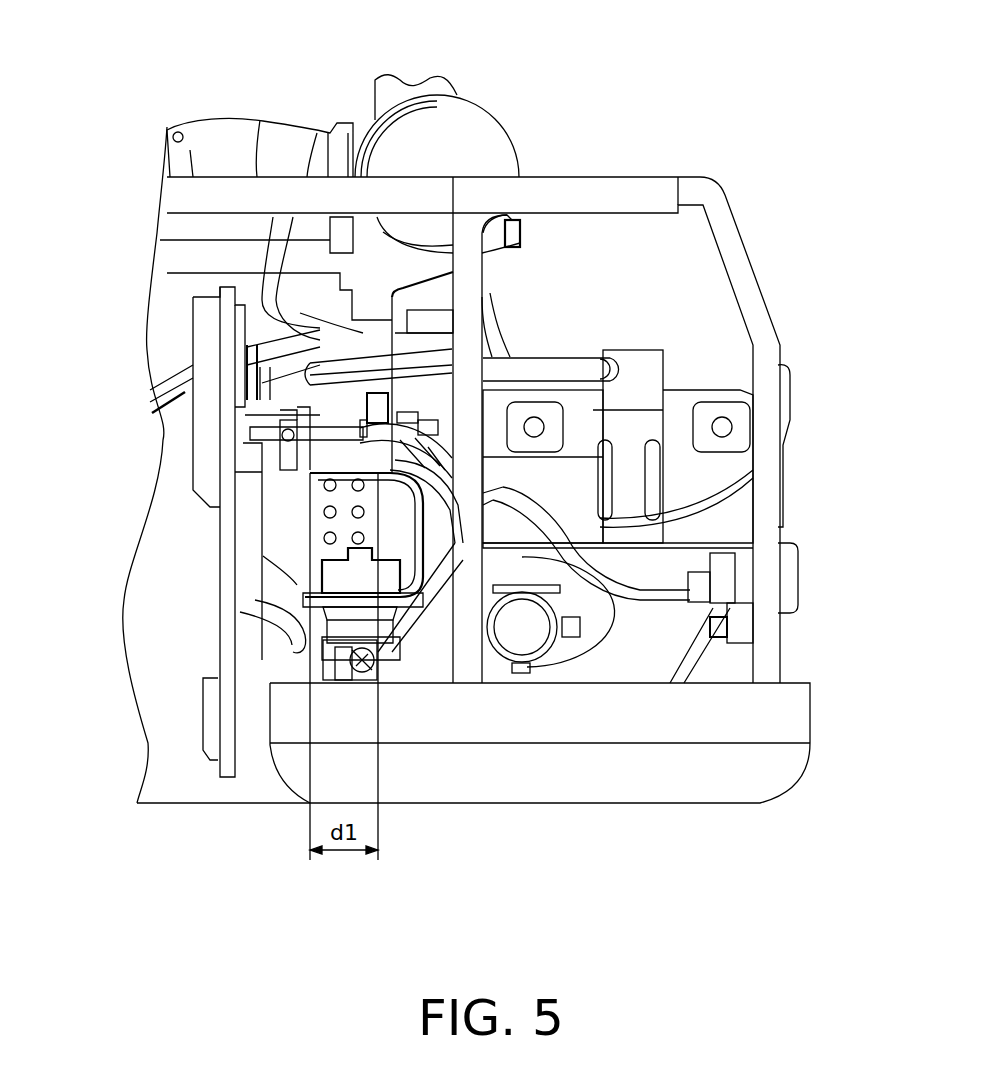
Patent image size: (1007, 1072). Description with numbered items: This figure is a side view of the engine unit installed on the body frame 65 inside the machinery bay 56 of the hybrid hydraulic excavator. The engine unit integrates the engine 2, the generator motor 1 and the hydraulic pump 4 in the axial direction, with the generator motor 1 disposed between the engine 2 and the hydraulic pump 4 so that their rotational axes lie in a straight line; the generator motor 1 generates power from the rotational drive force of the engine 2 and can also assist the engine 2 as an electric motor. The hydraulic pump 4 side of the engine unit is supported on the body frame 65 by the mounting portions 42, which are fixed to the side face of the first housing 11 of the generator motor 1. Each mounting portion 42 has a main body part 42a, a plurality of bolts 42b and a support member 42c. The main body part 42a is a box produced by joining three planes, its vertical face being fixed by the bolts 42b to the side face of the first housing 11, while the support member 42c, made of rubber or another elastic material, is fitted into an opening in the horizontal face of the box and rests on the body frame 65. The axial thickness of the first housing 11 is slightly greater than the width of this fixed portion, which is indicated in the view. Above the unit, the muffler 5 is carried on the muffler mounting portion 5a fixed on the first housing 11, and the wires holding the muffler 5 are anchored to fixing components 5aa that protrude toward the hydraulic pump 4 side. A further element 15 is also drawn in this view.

The generator motor 1 is at (403, 305).
The engine 2 is at (173, 312).
The hydraulic pump 4 is at (633, 333).
The muffler 5 is at (493, 110).
The muffler mounting portion 5a is at (435, 265).
The fixing components 5aa is at (507, 237).
The first housing 11 is at (245, 320).
The hose 15 is at (430, 338).
The mounting portions 42 is at (303, 484).
The main body part 42a is at (325, 505).
The bolts 42b is at (325, 538).
The support member 42c is at (353, 582).
The machinery bay 56 is at (713, 157).
The body frame 65 is at (388, 664).